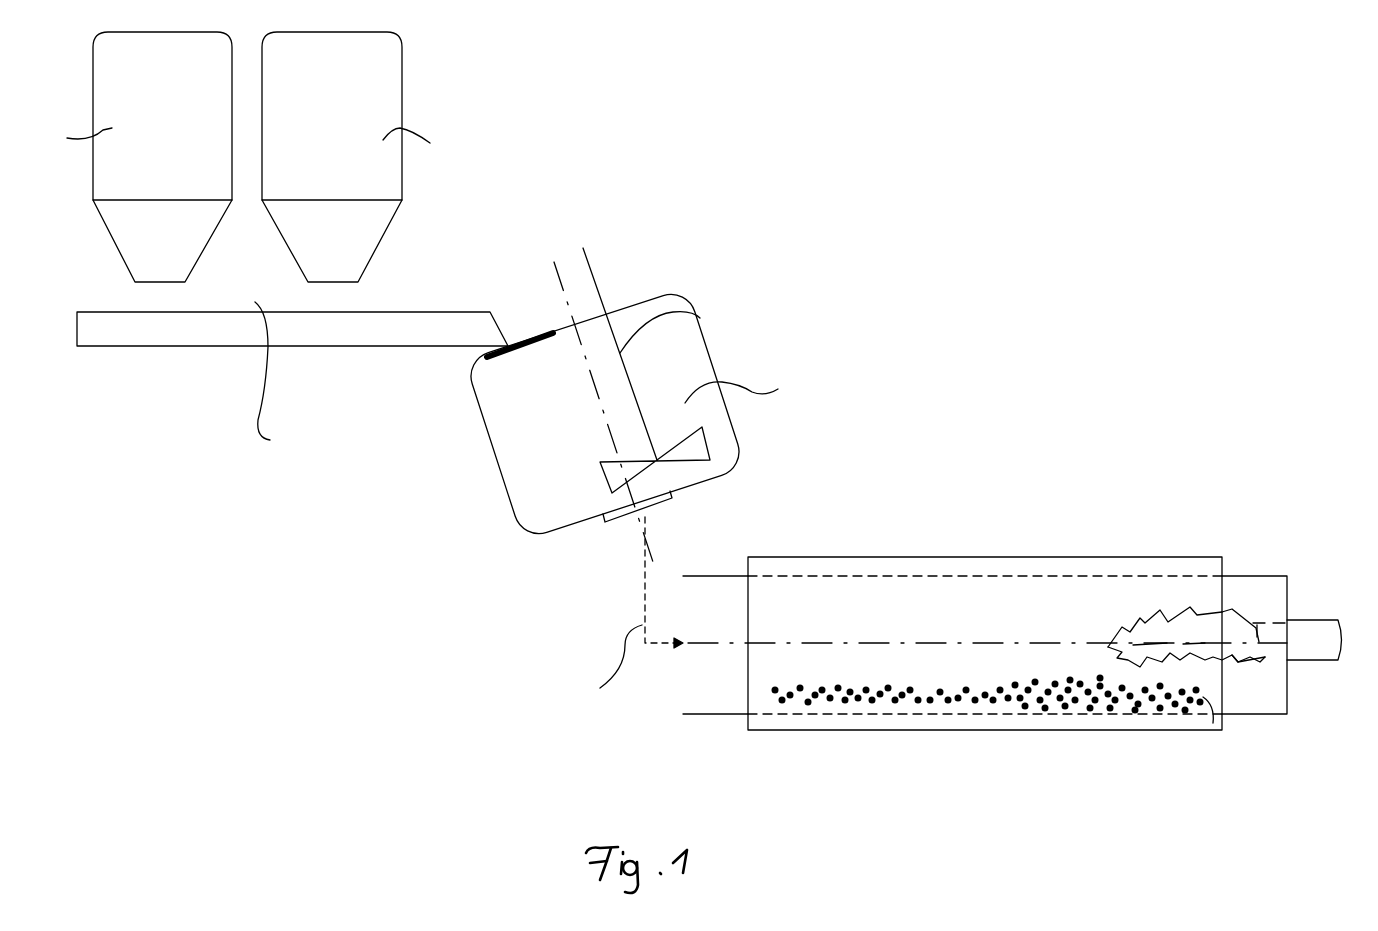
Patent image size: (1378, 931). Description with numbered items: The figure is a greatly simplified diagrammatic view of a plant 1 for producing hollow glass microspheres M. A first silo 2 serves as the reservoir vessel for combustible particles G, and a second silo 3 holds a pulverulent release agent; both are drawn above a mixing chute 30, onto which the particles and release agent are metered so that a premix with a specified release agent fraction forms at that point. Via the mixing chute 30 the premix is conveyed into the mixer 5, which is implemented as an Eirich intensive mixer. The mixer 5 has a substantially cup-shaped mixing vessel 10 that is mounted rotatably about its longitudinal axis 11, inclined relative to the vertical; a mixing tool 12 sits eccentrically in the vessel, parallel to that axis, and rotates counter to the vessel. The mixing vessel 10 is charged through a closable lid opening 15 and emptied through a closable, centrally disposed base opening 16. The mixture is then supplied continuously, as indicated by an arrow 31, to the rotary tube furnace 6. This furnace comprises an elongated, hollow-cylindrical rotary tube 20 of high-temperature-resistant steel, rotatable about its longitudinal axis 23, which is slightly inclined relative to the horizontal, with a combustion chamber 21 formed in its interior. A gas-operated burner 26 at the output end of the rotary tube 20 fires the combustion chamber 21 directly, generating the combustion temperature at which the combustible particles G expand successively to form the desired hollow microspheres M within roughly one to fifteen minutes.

The plant 1 is at (848, 236).
The first silo 2 is at (93, 91).
The second silo 3 is at (403, 87).
The mixer 5 is at (672, 242).
The rotary tube furnace 6 is at (982, 512).
The mixing vessel 10 is at (713, 352).
The longitudinal axis 11 is at (554, 262).
The mixing tool 12 is at (700, 318).
The lid opening 15 is at (492, 357).
The base opening 16 is at (660, 507).
The rotary tube 20 is at (713, 715).
The combustion chamber 21 is at (855, 630).
The longitudinal axis 23 is at (803, 643).
The burner 26 is at (1320, 617).
The mixing chute 30 is at (200, 347).
The arrow 31 is at (642, 603).
The combustible particles G is at (790, 703).
The hollow glass microspheres M is at (1112, 700).